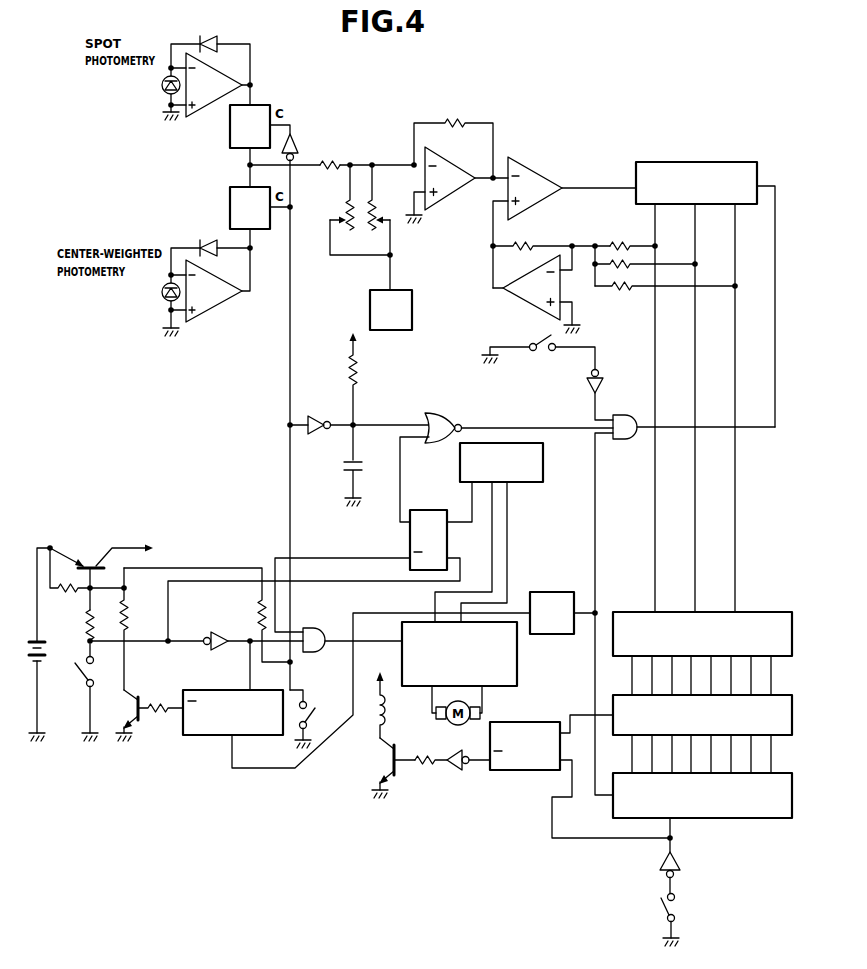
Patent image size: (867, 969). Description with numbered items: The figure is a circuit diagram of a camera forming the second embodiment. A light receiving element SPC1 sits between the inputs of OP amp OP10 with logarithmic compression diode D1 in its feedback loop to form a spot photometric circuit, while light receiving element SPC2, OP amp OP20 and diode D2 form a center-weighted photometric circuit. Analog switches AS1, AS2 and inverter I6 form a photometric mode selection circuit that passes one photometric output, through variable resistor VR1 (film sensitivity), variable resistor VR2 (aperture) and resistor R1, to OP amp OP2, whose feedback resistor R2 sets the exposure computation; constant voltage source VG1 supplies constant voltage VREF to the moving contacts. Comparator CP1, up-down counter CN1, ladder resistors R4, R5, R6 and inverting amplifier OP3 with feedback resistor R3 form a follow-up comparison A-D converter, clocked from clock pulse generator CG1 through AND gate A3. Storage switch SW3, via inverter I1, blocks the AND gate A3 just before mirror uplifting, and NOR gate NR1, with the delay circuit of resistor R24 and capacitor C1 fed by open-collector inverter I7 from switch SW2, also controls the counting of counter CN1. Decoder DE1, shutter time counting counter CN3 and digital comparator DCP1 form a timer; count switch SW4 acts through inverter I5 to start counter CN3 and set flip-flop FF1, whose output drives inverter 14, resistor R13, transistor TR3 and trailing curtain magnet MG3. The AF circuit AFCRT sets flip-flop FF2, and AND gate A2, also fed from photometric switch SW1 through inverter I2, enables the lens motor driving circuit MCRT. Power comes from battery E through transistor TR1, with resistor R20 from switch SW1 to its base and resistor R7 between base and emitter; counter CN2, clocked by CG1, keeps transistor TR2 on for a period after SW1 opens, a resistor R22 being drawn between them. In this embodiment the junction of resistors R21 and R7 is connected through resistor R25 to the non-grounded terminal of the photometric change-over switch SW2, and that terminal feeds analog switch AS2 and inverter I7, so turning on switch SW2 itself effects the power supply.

The light receiving element SPC1 is at (160, 85).
The operational amplifier OP10 is at (205, 85).
The diode D1 is at (206, 38).
The analog switch AS1 is at (250, 126).
The inverter I6 is at (298, 141).
The analog switch AS2 is at (250, 208).
The light receiving element SPC2 is at (160, 292).
The operational amplifier OP20 is at (205, 291).
The diode D2 is at (207, 240).
The resistor R1 is at (335, 161).
The variable resistor VR1 is at (343, 212).
The variable resistor VR2 is at (377, 210).
The constant voltage VREF is at (380, 242).
The constant voltage source VG1 is at (391, 292).
The operational amplifier OP2 is at (440, 185).
The resistor R2 is at (460, 121).
The comparator CP1 is at (564, 222).
The up-down counter CN1 is at (705, 387).
The resistor R3 is at (530, 241).
The operational amplifier OP3 is at (536, 294).
The ladder resistor R4 is at (613, 243).
The ladder resistor R5 is at (614, 270).
The ladder resistor R6 is at (631, 292).
The storage switch SW3 is at (541, 353).
The inverter I1 is at (603, 383).
The AND gate A3 is at (625, 440).
The inverter I7 is at (314, 416).
The resistor R24 is at (360, 368).
The capacitor C1 is at (362, 470).
The NOR gate NR1 is at (440, 412).
The AF circuit AFCRT is at (526, 482).
The RS flip-flop FF2 is at (425, 510).
The AND gate A2 is at (312, 653).
The lens motor driving circuit MCRT is at (517, 652).
The clock pulse generator CG1 is at (413, 680).
The magnet MG3 is at (386, 710).
The transistor TR3 is at (386, 760).
The resistor R13 is at (430, 775).
The inverter 14 is at (457, 770).
The RS flip-flop FF1 is at (525, 722).
The decoder DE1 is at (769, 612).
The digital comparator DCP1 is at (702, 734).
The shutter time counting counter CN3 is at (702, 805).
The inverter I5 is at (680, 866).
The count switch SW4 is at (680, 906).
The transistor TR1 is at (90, 560).
The power source battery E is at (30, 652).
The resistor R7 is at (68, 598).
The resistor R20 is at (86, 625).
The resistor R21 is at (130, 616).
The resistor R25 is at (256, 613).
The photometric switch SW1 is at (82, 679).
The inverter I2 is at (219, 652).
The transistor TR2 is at (133, 708).
The resistor R22 is at (158, 701).
The counter CN2 is at (197, 735).
The photometric mode change-over switch SW2 is at (316, 714).